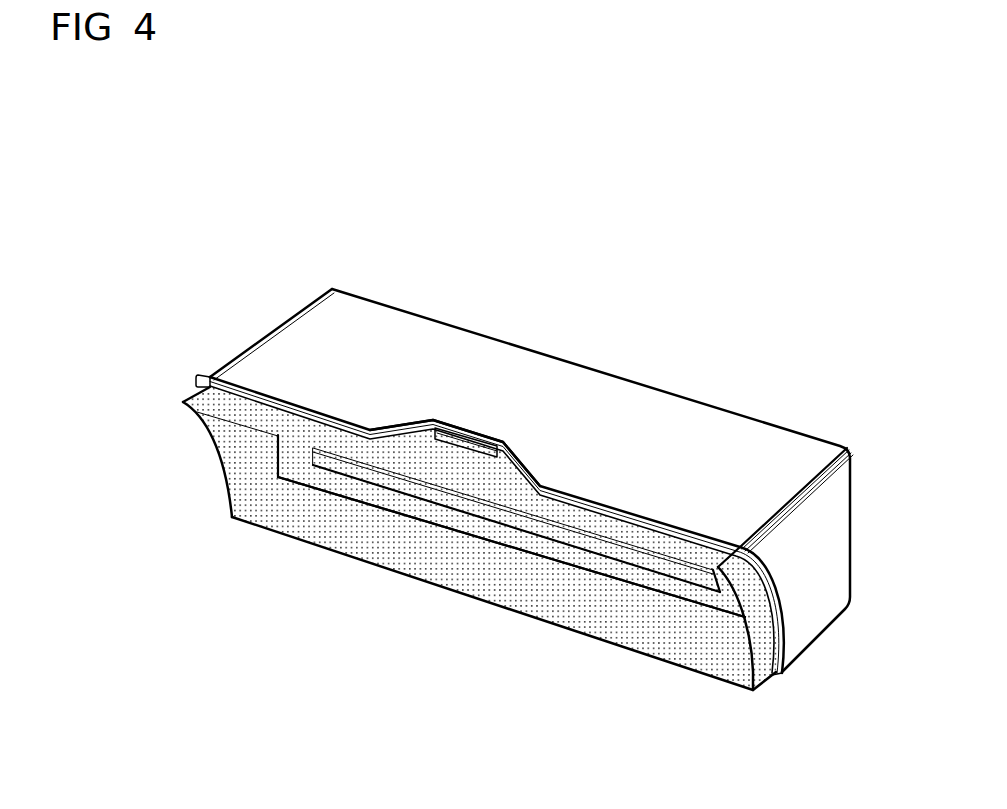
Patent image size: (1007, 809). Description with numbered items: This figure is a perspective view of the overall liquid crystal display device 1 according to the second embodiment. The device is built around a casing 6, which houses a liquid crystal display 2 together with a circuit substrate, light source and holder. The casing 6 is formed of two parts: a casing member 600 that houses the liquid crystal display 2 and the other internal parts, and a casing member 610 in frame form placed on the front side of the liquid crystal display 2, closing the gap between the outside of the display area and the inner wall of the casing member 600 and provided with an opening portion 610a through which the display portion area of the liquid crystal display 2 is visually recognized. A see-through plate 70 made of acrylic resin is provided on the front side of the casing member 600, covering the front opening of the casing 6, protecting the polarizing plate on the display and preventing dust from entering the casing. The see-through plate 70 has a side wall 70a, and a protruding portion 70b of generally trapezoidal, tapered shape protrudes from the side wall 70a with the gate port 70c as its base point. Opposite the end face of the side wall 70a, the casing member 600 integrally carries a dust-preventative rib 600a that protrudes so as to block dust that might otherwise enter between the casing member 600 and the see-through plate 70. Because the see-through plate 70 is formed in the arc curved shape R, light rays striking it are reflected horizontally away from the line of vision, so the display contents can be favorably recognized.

The liquid crystal display device 1 is at (492, 504).
The liquid crystal display 2 is at (427, 487).
The casing 6 is at (492, 474).
The casing member 600 is at (492, 488).
The dust-preventative rib 600a is at (203, 376).
The casing member 610 is at (471, 456).
The opening portion 610a is at (373, 483).
The see-through plate 70 is at (447, 524).
The side wall 70a is at (205, 412).
The protruding portion 70b is at (410, 437).
The gate port 70c is at (473, 433).
The arc curved shape R is at (215, 472).